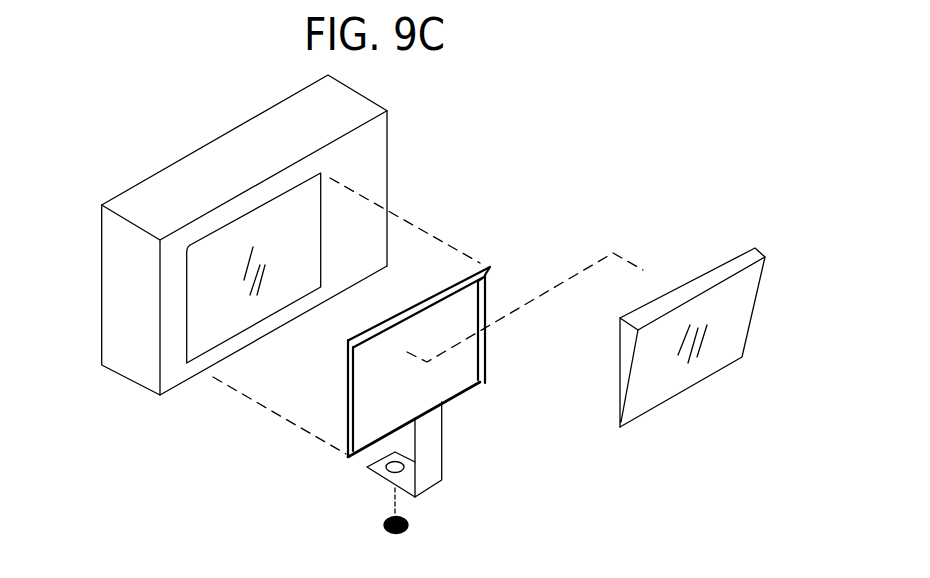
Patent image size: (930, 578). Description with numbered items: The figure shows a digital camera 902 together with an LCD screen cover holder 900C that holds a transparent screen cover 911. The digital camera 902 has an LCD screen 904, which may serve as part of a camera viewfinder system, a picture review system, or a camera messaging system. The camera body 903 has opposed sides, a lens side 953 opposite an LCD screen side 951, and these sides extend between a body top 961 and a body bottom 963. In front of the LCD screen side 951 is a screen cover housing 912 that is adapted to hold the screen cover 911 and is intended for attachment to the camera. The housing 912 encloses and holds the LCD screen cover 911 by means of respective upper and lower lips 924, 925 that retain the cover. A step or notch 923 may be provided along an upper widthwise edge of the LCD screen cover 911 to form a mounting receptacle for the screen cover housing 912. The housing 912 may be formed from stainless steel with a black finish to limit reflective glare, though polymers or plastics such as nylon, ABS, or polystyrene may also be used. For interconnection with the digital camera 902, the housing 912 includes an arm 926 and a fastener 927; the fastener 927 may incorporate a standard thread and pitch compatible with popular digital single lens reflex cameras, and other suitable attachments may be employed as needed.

The LCD screen cover holder 900C is at (652, 75).
The digital camera 902 is at (279, 286).
The camera body 903 is at (388, 182).
The LCD screen side 951 is at (340, 245).
The body top 961 is at (168, 185).
The lens side 953 is at (98, 242).
The body bottom 963 is at (107, 373).
The LCD screen 904 is at (207, 337).
The screen cover housing 912 is at (417, 351).
The upper lip 924 is at (487, 268).
The lower lip 925 is at (474, 385).
The arm 926 is at (445, 468).
The fastener 927 is at (385, 527).
The screen cover 911 is at (660, 323).
The step or notch 923 is at (621, 318).